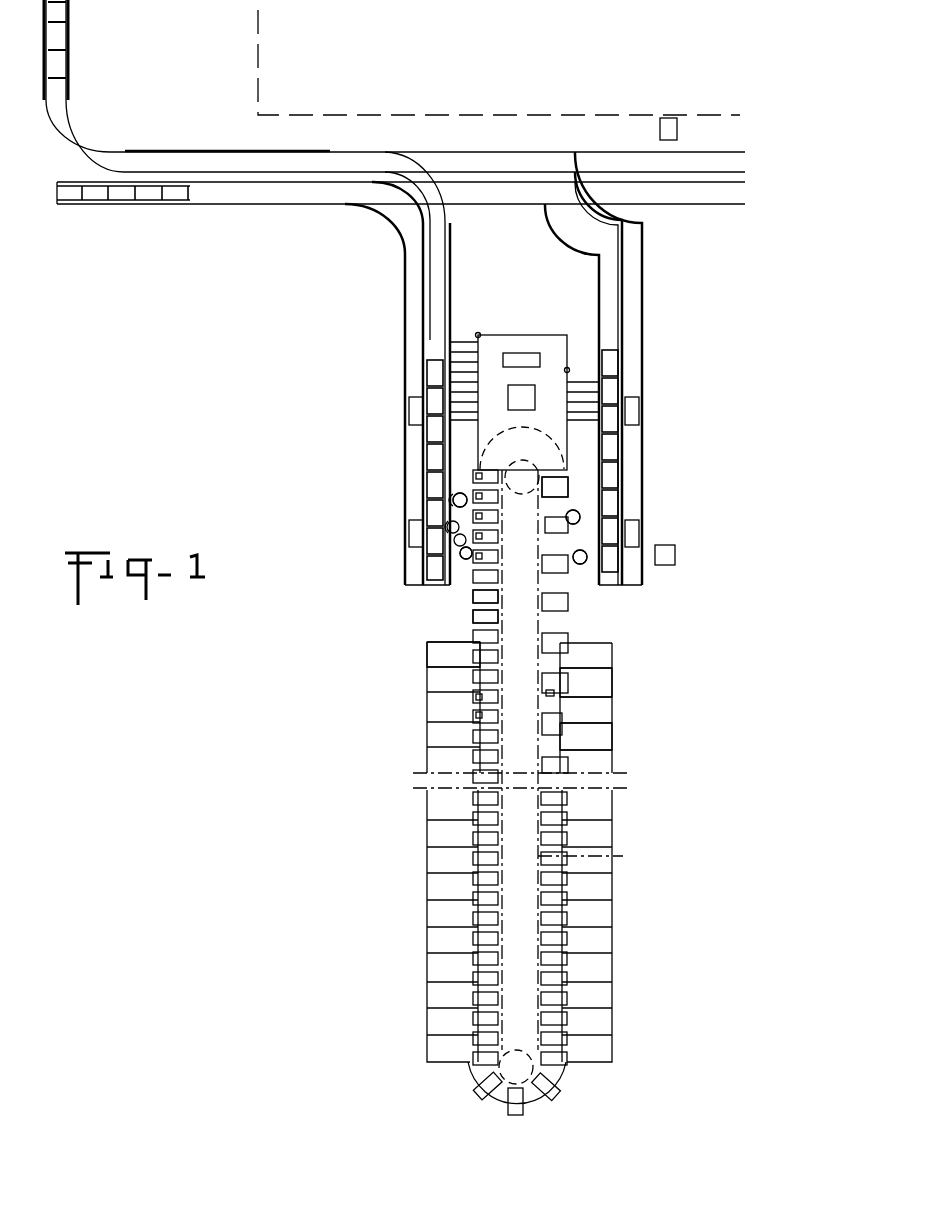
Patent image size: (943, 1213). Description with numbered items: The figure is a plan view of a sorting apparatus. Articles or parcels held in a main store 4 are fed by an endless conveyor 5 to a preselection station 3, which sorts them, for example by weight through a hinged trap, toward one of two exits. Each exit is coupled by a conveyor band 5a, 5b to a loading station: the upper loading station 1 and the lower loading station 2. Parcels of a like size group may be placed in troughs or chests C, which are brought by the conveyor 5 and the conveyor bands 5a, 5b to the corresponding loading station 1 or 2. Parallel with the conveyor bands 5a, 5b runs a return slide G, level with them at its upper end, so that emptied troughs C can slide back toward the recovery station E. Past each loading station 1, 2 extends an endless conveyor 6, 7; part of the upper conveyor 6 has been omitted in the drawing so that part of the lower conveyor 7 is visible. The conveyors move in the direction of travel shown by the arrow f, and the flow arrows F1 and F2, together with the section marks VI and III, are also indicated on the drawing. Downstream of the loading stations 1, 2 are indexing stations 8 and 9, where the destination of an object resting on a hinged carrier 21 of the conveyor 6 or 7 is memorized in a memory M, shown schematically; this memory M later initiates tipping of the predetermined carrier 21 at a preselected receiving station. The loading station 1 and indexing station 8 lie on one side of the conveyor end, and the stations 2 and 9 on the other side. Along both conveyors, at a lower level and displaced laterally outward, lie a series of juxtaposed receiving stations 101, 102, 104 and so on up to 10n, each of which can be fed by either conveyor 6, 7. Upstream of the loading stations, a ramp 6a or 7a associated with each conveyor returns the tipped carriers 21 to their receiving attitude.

The upper loading station 1 is at (458, 569).
The lower loading station 2 is at (589, 512).
The preselection station 3 is at (181, 148).
The main store 4 is at (258, 72).
The endless conveyor 5 is at (68, 79).
The conveyor band 5a is at (437, 270).
The conveyor band 5b is at (610, 207).
The upper conveyor 6 is at (461, 633).
The ramp 6a is at (492, 594).
The lower conveyor 7 is at (575, 635).
The ramp 7a is at (492, 594).
The indexing station 8 is at (461, 486).
The indexing station 9 is at (591, 572).
The receiving station 10n is at (427, 655).
The hinged carrier 21 is at (474, 713).
The receiving station 101 is at (612, 655).
The receiving station 102 is at (612, 682).
The receiving station 104 is at (612, 743).
The troughs or chests C is at (58, 40).
The recovery station E is at (70, 205).
The return slide G is at (421, 512).
The memory M is at (524, 415).
The direction of flow F1 is at (520, 584).
The direction of flow F2 is at (622, 917).
The direction of travel f is at (484, 1120).
The section line VI is at (520, 862).
The section line III is at (392, 1002).